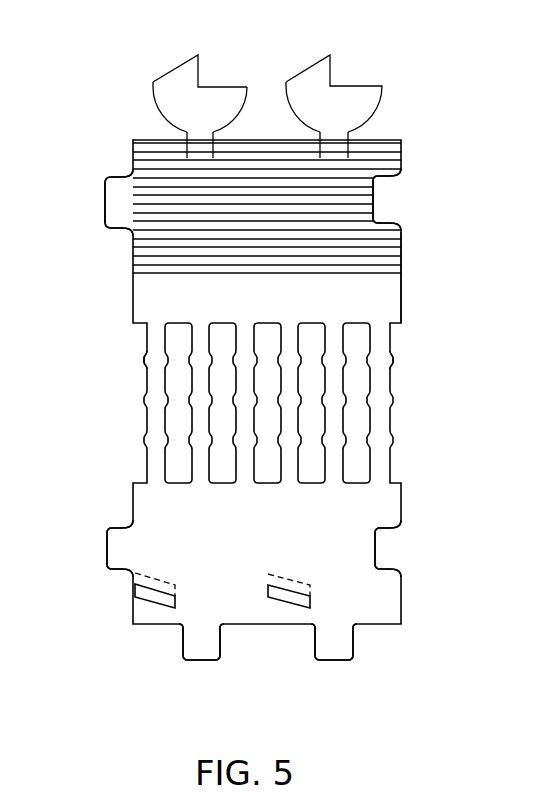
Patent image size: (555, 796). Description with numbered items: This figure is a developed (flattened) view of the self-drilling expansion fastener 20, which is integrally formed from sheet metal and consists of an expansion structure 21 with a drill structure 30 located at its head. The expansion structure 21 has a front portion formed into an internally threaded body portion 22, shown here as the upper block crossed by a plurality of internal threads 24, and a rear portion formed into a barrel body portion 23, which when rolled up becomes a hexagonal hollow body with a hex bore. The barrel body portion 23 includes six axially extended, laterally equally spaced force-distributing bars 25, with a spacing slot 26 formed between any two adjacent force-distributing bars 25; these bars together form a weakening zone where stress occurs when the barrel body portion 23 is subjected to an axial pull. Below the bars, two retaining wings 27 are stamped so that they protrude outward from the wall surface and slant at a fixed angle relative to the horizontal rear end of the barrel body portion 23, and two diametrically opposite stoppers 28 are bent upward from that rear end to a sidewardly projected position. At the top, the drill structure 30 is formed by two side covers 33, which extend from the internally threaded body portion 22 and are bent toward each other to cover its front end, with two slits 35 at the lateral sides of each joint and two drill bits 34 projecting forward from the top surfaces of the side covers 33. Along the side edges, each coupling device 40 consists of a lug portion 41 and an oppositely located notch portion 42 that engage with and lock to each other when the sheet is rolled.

The self-drilling expansion fastener 20 is at (512, 33).
The expansion structure 21 is at (432, 168).
The internally threaded body portion 22 is at (415, 259).
The barrel body portion 23 is at (414, 310).
The internal threads 24 is at (150, 245).
The force-distributing bars 25 is at (152, 432).
The spacing slot 26 is at (176, 368).
The retaining wing 27 is at (151, 580).
The stopper 28 is at (203, 644).
The drill structure 30 is at (400, 60).
The side cover 33 is at (175, 104).
The drill bit 34 is at (190, 78).
The slit 35 is at (187, 143).
The coupling device 40 is at (82, 172).
The lug portion 41 is at (112, 208).
The notch portion 42 is at (388, 223).